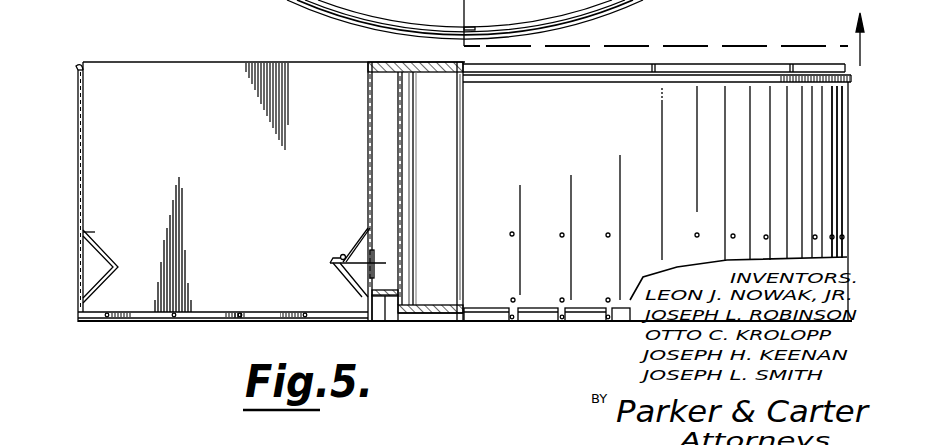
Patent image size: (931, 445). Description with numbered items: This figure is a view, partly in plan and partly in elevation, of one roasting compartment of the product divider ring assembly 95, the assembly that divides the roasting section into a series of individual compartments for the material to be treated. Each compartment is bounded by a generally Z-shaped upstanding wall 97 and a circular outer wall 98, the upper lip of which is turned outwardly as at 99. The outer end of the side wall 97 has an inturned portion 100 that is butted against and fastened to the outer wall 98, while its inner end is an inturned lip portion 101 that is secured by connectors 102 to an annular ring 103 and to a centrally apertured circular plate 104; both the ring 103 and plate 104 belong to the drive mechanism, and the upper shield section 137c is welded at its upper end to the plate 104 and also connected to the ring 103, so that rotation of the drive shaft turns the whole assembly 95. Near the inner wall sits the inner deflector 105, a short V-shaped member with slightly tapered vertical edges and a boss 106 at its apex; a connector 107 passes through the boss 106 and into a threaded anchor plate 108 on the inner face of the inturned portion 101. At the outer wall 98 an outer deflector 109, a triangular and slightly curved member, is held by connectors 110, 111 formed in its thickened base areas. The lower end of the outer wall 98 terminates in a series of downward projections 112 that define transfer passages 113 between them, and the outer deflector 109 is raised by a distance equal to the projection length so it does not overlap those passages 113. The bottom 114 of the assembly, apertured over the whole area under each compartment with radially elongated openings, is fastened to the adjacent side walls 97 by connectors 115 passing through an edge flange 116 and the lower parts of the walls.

The product divider ring assembly 95 is at (207, 51).
The Z-shaped upstanding wall 97 is at (254, 61).
The circular outer wall 98 is at (840, 160).
The outwardly turned upper lip 99 is at (78, 68).
The inturned portion 100 is at (86, 160).
The inturned lip portion 101 is at (368, 177).
The connectors 102 is at (367, 68).
The annular ring 103 is at (384, 322).
The centrally apertured circular plate 104 is at (435, 74).
The inner deflector 105 is at (343, 283).
The boss 106 is at (341, 255).
The connector 107 is at (352, 247).
The threaded anchor plate 108 is at (375, 252).
The outer deflector 109 is at (100, 232).
The connector 110 is at (512, 231).
The connector 111 is at (562, 297).
The projections 112 is at (563, 323).
The transfer passages 113 is at (520, 323).
The bottom 114 is at (190, 323).
The connectors 115 is at (246, 323).
The edge flange 116 is at (242, 298).
The upper shield section 137c is at (397, 140).